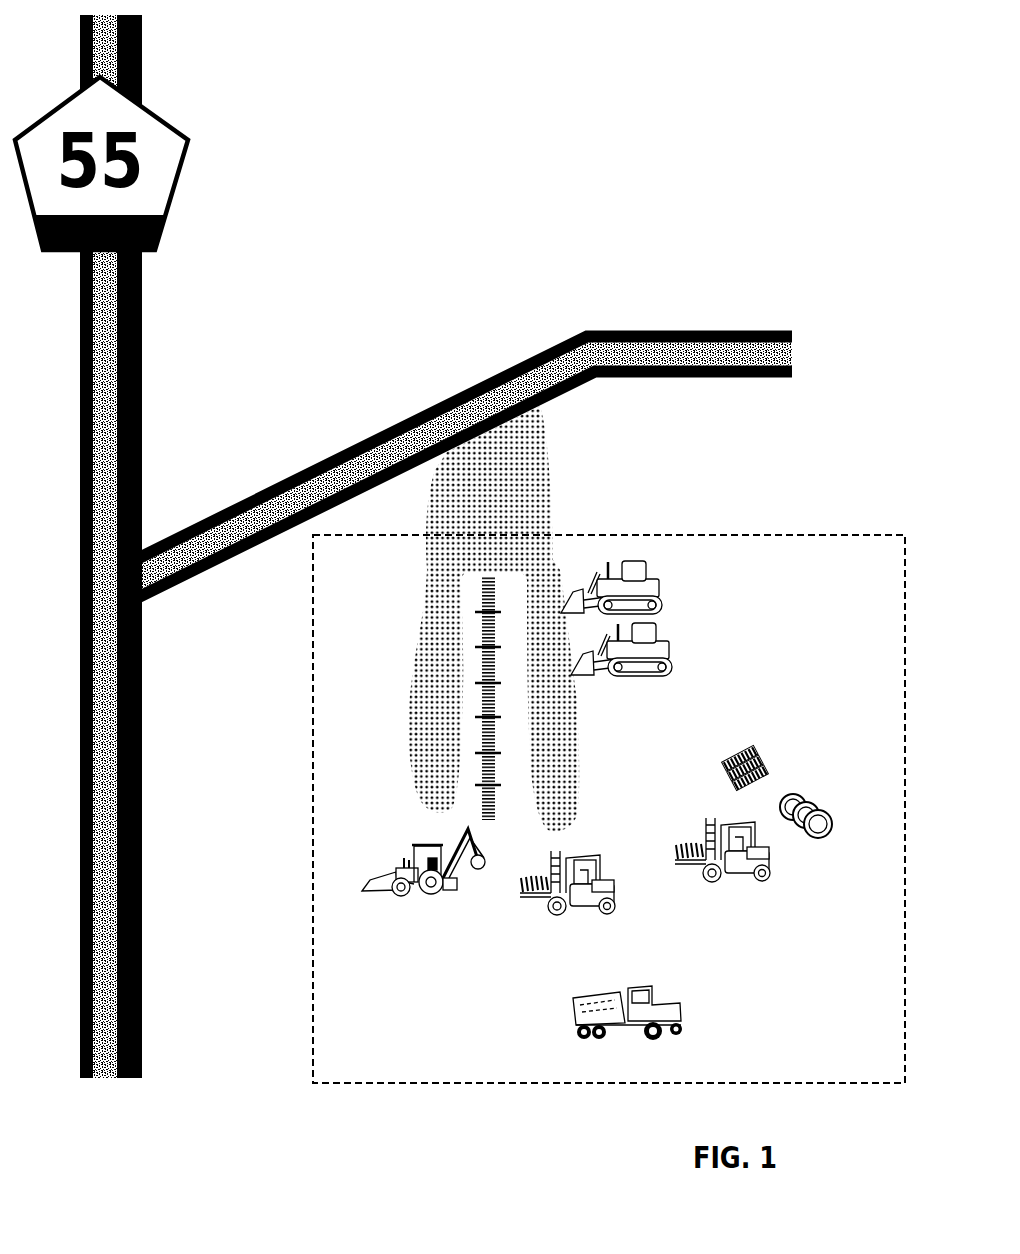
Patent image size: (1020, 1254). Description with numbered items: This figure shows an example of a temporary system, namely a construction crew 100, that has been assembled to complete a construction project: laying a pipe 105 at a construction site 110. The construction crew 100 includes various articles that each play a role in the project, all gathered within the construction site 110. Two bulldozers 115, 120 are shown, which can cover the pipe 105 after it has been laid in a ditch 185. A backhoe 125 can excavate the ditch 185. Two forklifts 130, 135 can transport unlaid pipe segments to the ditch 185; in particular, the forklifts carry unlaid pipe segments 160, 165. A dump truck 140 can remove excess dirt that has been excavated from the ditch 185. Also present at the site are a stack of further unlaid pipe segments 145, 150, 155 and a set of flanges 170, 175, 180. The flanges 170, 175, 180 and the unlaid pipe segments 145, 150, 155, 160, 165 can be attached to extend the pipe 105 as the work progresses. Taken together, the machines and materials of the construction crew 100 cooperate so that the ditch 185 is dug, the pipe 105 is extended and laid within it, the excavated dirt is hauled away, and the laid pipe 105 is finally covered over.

The construction crew 100 is at (777, 442).
The pipe 105 is at (497, 735).
The construction site 110 is at (770, 535).
The bulldozer 115 is at (650, 587).
The bulldozer 120 is at (663, 650).
The backhoe 125 is at (477, 857).
The forklift 130 is at (583, 853).
The forklift 135 is at (770, 865).
The dump truck 140 is at (652, 990).
The unlaid pipe segment 145 is at (757, 748).
The unlaid pipe segment 150 is at (763, 758).
The unlaid pipe segment 155 is at (770, 770).
The unlaid pipe segment 160 is at (523, 886).
The unlaid pipe segment 165 is at (683, 857).
The flange 170 is at (797, 802).
The flange 175 is at (815, 812).
The flange 180 is at (830, 832).
The ditch 185 is at (517, 815).